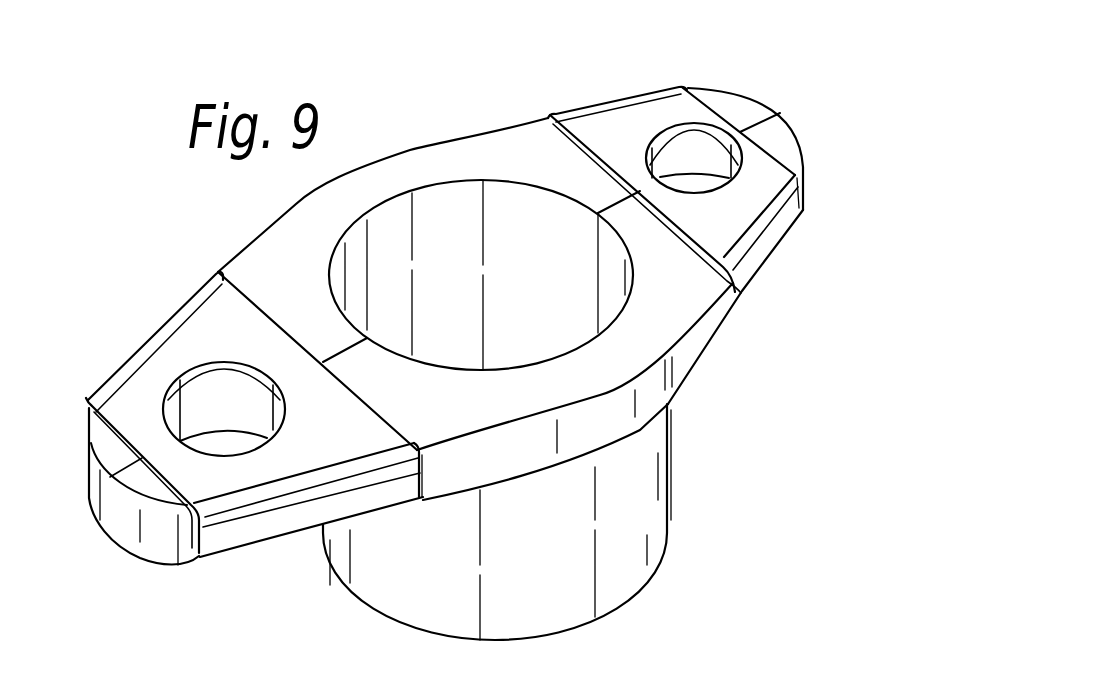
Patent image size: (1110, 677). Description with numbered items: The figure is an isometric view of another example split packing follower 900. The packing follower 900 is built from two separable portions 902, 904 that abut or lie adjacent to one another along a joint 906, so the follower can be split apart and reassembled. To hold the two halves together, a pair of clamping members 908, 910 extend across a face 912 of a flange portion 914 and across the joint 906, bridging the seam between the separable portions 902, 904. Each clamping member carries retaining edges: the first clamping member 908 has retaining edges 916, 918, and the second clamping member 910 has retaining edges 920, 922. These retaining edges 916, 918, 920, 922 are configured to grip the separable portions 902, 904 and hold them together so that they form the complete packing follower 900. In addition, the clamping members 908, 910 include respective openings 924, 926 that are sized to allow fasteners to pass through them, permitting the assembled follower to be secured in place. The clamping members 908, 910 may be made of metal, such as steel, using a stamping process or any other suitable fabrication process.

The split packing follower 900 is at (424, 118).
The separable portion 902 is at (153, 533).
The separable portion 904 is at (112, 435).
The joint 906 is at (340, 346).
The clamping member 908 is at (194, 330).
The clamping member 910 is at (633, 122).
The face 912 is at (445, 416).
The flange portion 914 is at (683, 359).
The retaining edge 916 is at (198, 547).
The retaining edge 918 is at (83, 398).
The retaining edge 920 is at (737, 298).
The retaining edge 922 is at (552, 112).
The opening 924 is at (240, 418).
The opening 926 is at (712, 169).